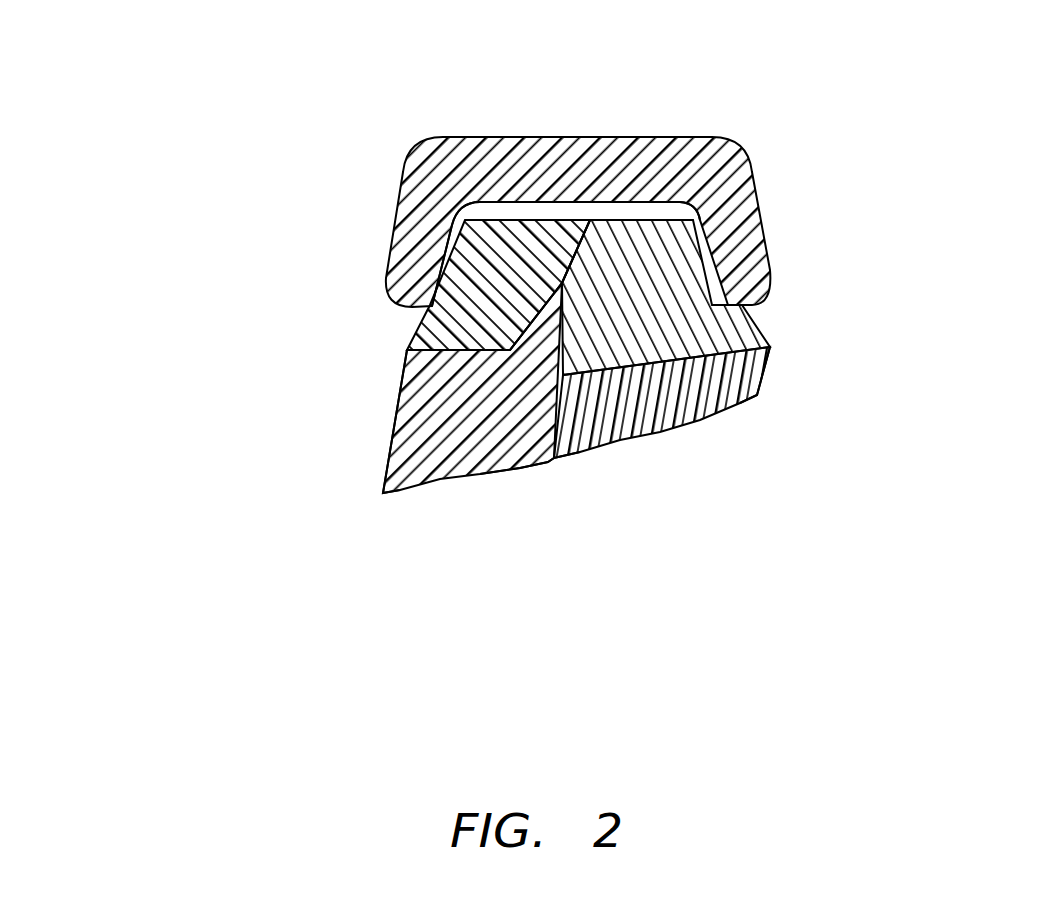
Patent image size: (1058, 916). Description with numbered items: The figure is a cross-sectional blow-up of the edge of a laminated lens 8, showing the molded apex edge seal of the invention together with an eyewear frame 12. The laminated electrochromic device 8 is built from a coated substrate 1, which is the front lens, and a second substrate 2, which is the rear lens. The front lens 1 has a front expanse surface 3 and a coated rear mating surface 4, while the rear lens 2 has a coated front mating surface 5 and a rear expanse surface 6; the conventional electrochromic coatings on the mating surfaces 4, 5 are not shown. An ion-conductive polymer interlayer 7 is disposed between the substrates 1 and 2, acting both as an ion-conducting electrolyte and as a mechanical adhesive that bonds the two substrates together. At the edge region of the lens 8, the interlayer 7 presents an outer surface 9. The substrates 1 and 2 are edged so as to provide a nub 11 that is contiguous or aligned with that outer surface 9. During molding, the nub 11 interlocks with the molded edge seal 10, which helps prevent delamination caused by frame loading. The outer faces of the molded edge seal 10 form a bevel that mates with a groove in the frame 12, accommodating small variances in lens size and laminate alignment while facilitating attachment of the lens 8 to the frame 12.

The coated substrate 1 is at (437, 405).
The substrate 2 is at (747, 407).
The front expanse surface 3 is at (382, 487).
The coated rear mating surface 4 is at (460, 523).
The coated front mating surface 5 is at (552, 460).
The rear expanse surface 6 is at (828, 459).
The ion-conductive polymer interlayer 7 is at (739, 299).
The laminated device 8 is at (258, 435).
The outer surface 9 is at (679, 200).
The molded edge seal 10 is at (422, 321).
The nub 11 is at (558, 292).
The frame 12 is at (660, 162).